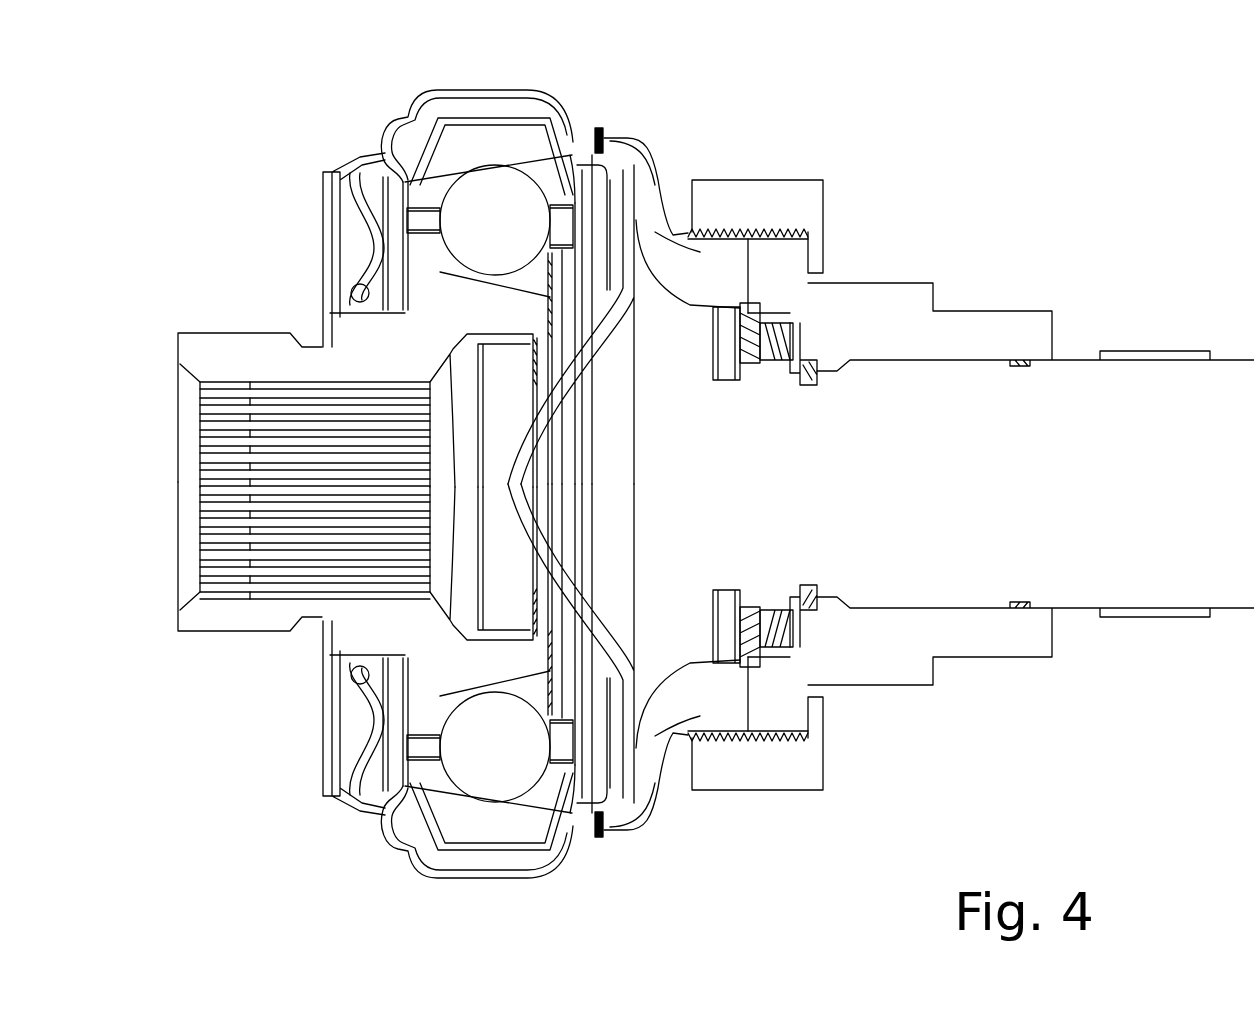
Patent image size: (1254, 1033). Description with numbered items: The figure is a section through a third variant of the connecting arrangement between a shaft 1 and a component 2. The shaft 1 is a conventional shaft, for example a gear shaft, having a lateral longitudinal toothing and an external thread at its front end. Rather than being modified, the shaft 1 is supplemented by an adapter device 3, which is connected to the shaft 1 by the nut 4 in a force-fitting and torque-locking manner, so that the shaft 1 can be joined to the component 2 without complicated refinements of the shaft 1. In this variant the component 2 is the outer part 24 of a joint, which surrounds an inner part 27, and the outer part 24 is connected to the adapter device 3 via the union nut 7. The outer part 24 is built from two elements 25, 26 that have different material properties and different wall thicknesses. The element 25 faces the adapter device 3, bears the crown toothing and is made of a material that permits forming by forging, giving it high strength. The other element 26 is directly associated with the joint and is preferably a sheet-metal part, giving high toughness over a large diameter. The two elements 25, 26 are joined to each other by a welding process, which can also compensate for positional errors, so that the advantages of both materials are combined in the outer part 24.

The shaft 1 is at (1060, 585).
The component 2 is at (685, 703).
The adapter device 3 is at (803, 675).
The nut 4 is at (790, 595).
The union nut 7 is at (780, 760).
The outer part 24 is at (645, 197).
The element 25 is at (672, 262).
The element 26 is at (575, 138).
The inner part 27 is at (350, 333).